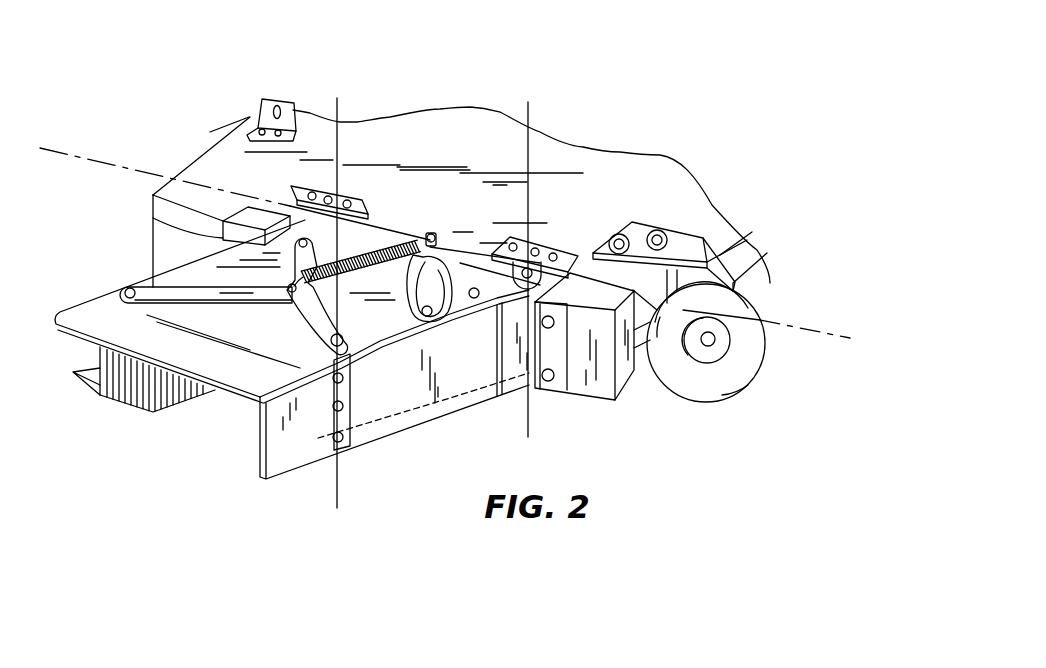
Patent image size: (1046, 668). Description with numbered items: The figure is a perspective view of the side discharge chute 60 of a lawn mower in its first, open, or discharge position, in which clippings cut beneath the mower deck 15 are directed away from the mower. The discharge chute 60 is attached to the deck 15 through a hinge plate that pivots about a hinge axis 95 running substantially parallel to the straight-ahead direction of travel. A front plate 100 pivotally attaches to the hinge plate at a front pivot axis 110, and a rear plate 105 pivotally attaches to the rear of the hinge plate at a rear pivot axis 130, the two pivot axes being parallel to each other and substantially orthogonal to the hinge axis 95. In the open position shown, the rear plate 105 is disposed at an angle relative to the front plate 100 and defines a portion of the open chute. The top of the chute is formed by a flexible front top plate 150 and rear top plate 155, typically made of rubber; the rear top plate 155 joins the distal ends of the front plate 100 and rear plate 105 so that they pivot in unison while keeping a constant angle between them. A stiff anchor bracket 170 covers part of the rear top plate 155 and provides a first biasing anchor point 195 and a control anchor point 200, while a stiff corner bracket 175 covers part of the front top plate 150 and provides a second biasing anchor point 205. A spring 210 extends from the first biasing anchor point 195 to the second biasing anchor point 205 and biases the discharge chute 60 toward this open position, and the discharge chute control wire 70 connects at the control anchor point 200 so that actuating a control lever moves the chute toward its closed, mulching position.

The deck 15 is at (677, 208).
The discharge chute 60 is at (632, 79).
The discharge chute control wire 70 is at (342, 75).
The hinge axis 95 is at (152, 173).
The front plate 100 is at (410, 418).
The rear plate 105 is at (153, 397).
The front pivot axis 110 is at (533, 394).
The rear pivot axis 130 is at (338, 110).
The front top plate 150 is at (458, 293).
The rear top plate 155 is at (362, 258).
The anchor bracket 170 is at (167, 290).
The corner bracket 175 is at (462, 296).
The first biasing anchor point 195 is at (293, 292).
The control anchor point 200 is at (153, 221).
The second biasing anchor point 205 is at (438, 240).
The spring 210 is at (393, 262).